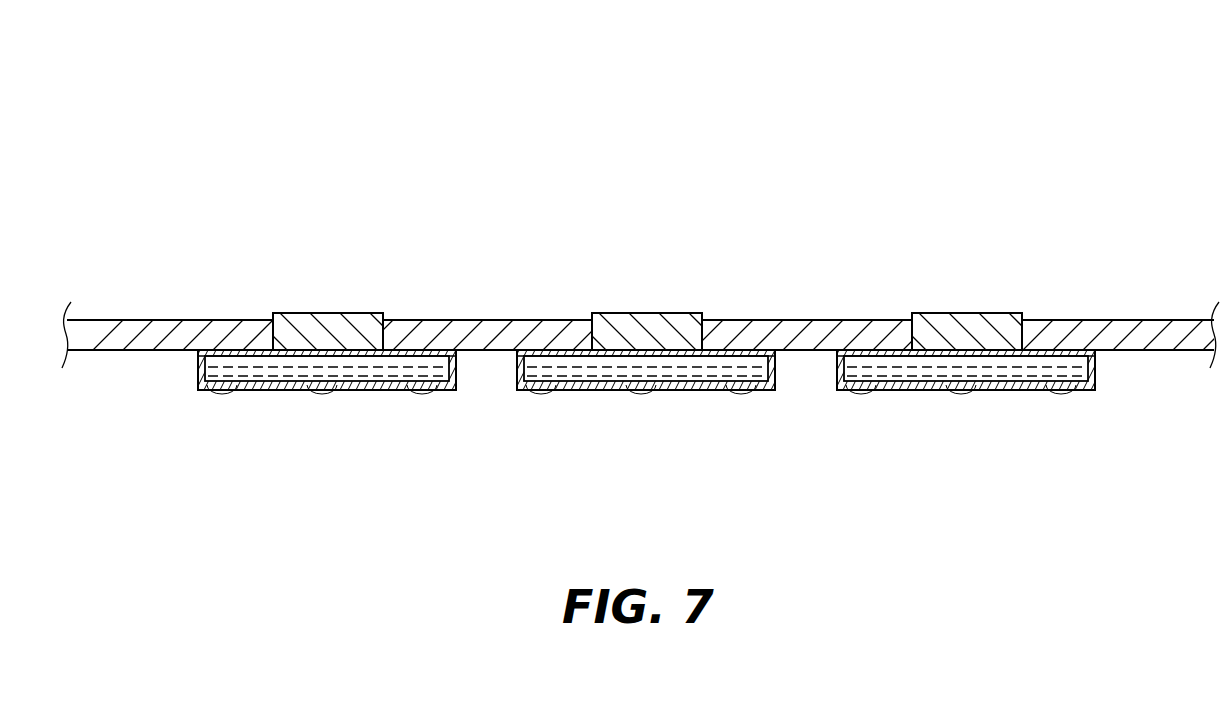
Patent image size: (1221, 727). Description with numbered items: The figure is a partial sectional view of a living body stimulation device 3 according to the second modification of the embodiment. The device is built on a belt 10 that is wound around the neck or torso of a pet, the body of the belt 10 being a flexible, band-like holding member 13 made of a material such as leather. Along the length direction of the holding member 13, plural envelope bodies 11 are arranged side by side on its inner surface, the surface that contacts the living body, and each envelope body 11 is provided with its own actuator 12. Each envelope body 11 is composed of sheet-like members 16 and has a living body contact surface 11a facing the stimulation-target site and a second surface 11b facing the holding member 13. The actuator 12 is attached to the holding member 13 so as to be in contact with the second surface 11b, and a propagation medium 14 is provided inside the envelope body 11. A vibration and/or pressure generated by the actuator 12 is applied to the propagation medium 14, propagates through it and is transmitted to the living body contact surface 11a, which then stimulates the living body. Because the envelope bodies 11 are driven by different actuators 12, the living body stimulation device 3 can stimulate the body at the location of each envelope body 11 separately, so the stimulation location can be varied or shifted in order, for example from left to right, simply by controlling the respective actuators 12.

The living body stimulation device 3 is at (609, 125).
The belt 10 is at (194, 310).
The envelope body 11 is at (417, 338).
The living body contact surface 11a is at (248, 390).
The second surface 11b is at (241, 349).
The actuator 12 is at (342, 322).
The holding member 13 is at (485, 332).
The propagation medium 14 is at (368, 373).
The sheet-like member 16 is at (315, 390).